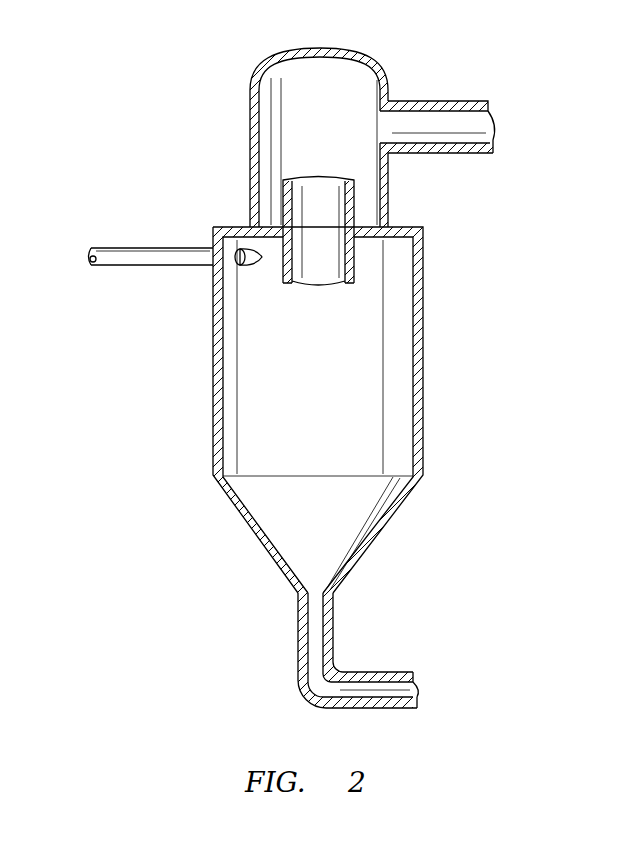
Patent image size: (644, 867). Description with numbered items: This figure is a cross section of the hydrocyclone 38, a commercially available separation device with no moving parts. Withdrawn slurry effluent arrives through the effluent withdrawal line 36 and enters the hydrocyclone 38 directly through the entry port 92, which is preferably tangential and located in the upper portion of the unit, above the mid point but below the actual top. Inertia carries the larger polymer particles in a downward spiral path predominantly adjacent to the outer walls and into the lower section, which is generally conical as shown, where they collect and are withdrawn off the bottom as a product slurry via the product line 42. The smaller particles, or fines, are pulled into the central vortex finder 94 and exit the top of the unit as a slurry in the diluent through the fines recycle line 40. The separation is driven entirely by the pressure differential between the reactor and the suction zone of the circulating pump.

The effluent withdrawal line 36 is at (157, 247).
The hydrocyclone 38 is at (303, 390).
The fines recycle line 40 is at (444, 101).
The product line 42 is at (388, 672).
The entry port 92 is at (257, 270).
The central vortex finder 94 is at (315, 176).